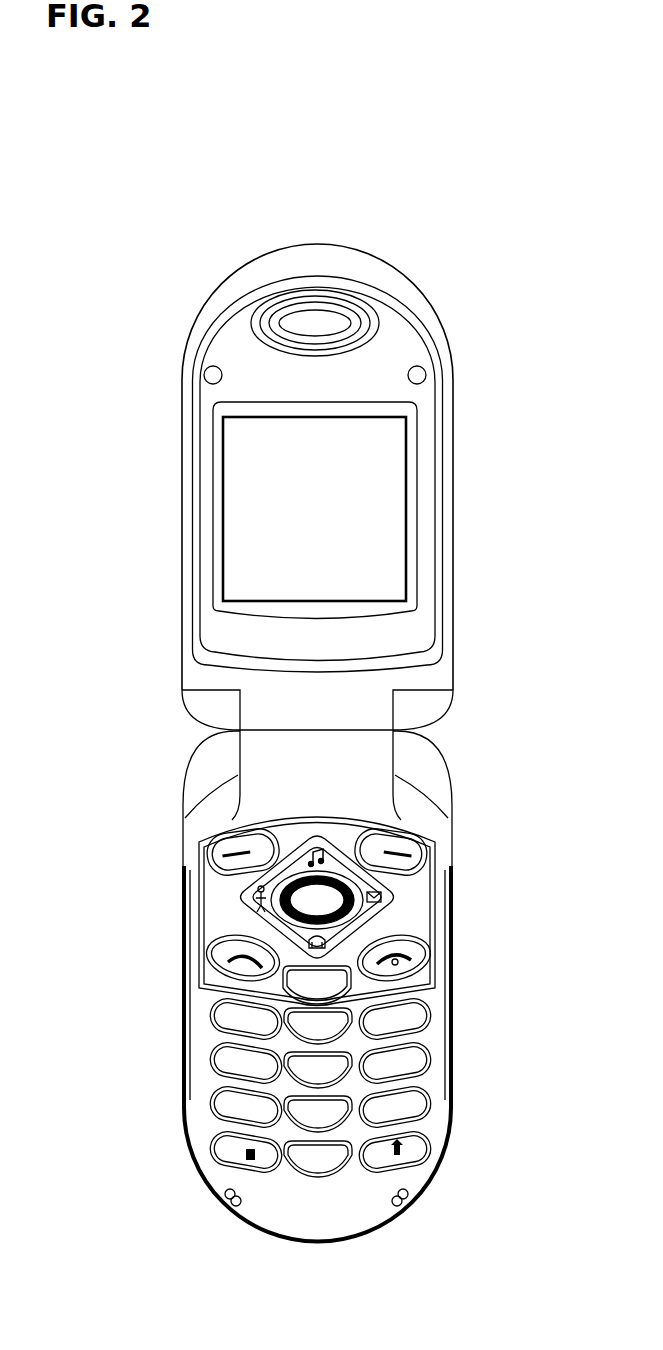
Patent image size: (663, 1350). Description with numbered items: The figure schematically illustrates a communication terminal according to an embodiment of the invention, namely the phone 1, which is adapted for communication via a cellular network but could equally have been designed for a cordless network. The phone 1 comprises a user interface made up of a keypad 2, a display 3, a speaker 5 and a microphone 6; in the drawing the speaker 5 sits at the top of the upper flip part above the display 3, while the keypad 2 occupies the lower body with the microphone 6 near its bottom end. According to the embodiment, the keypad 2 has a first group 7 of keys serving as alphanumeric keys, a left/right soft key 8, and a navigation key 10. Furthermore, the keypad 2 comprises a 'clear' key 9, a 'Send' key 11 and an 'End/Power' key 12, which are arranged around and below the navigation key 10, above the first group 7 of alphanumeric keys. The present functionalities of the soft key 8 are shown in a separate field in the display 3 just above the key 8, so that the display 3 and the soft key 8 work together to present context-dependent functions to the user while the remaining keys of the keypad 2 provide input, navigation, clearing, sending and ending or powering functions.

The phone 1 is at (220, 158).
The keypad 2 is at (432, 1132).
The display 3 is at (393, 535).
The speaker 5 is at (316, 320).
The microphone 6 is at (423, 1200).
The first group of keys 7 is at (217, 1058).
The left/right soft key 8 is at (207, 842).
The clear key 9 is at (350, 992).
The navigation key 10 is at (375, 917).
The Send key 11 is at (205, 955).
The End/Power key 12 is at (425, 957).